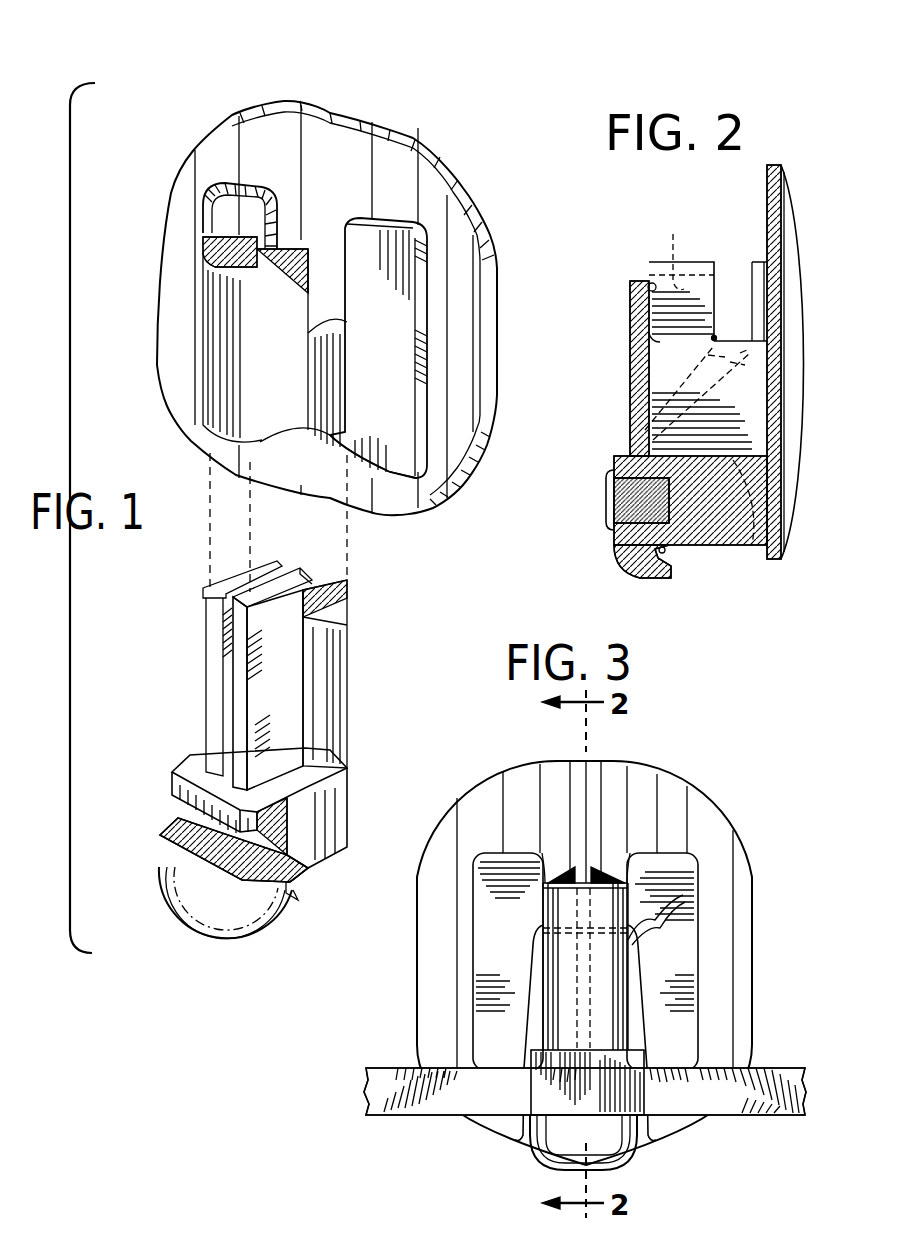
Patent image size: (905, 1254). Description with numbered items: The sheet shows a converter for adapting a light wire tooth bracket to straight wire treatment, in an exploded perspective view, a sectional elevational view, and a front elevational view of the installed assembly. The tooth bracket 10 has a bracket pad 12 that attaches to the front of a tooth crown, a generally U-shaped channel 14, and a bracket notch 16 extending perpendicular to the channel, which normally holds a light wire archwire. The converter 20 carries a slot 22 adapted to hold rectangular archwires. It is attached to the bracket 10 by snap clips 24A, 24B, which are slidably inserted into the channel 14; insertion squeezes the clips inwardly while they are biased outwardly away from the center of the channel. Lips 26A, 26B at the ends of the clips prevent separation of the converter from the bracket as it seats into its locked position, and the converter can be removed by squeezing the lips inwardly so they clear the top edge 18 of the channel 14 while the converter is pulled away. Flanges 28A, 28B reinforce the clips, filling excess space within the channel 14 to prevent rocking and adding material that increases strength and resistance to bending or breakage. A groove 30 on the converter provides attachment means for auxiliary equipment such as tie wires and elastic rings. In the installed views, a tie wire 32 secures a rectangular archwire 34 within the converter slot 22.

In FIG. 1, the tooth bracket 10 is at (197, 177).
In FIG. 2, the tooth bracket 10 is at (764, 168).
In FIG. 3, the tooth bracket 10 is at (715, 793).
In FIG. 1, the bracket pad 12 is at (400, 165).
In FIG. 2, the bracket pad 12 is at (769, 206).
In FIG. 3, the bracket pad 12 is at (712, 825).
In FIG. 1, the channel 14 is at (212, 240).
In FIG. 2, the channel 14 is at (653, 282).
In FIG. 1, the bracket notch 16 is at (340, 320).
In FIG. 2, the bracket notch 16 is at (733, 370).
In FIG. 1, the top edge 18 is at (287, 248).
In FIG. 2, the top edge 18 is at (634, 279).
In FIG. 3, the top edge 18 is at (573, 870).
In FIG. 1, the converter 20 is at (145, 760).
In FIG. 2, the converter 20 is at (603, 548).
In FIG. 3, the converter 20 is at (533, 1157).
In FIG. 1, the slot 22 is at (195, 835).
In FIG. 2, the slot 22 is at (630, 500).
In FIG. 3, the slot 22 is at (562, 1112).
In FIG. 1, the snap clip 24A is at (207, 672).
In FIG. 2, the snap clip 24A is at (660, 341).
In FIG. 3, the snap clip 24A is at (580, 955).
In FIG. 1, the snap clip 24B is at (285, 697).
In FIG. 3, the snap clip 24B is at (590, 985).
In FIG. 1, the lip 26A is at (205, 592).
In FIG. 2, the lip 26A is at (673, 234).
In FIG. 3, the lip 26A is at (545, 883).
In FIG. 1, the lip 26B is at (297, 597).
In FIG. 3, the lip 26B is at (627, 883).
In FIG. 1, the flange 28A is at (302, 612).
In FIG. 1, the flange 28B is at (340, 620).
In FIG. 1, the groove 30 is at (300, 888).
In FIG. 2, the groove 30 is at (668, 563).
In FIG. 2, the tie wire 32 is at (714, 334).
In FIG. 3, the tie wire 32 is at (645, 1043).
In FIG. 2, the rectangular archwire 34 is at (630, 513).
In FIG. 3, the rectangular archwire 34 is at (378, 1095).